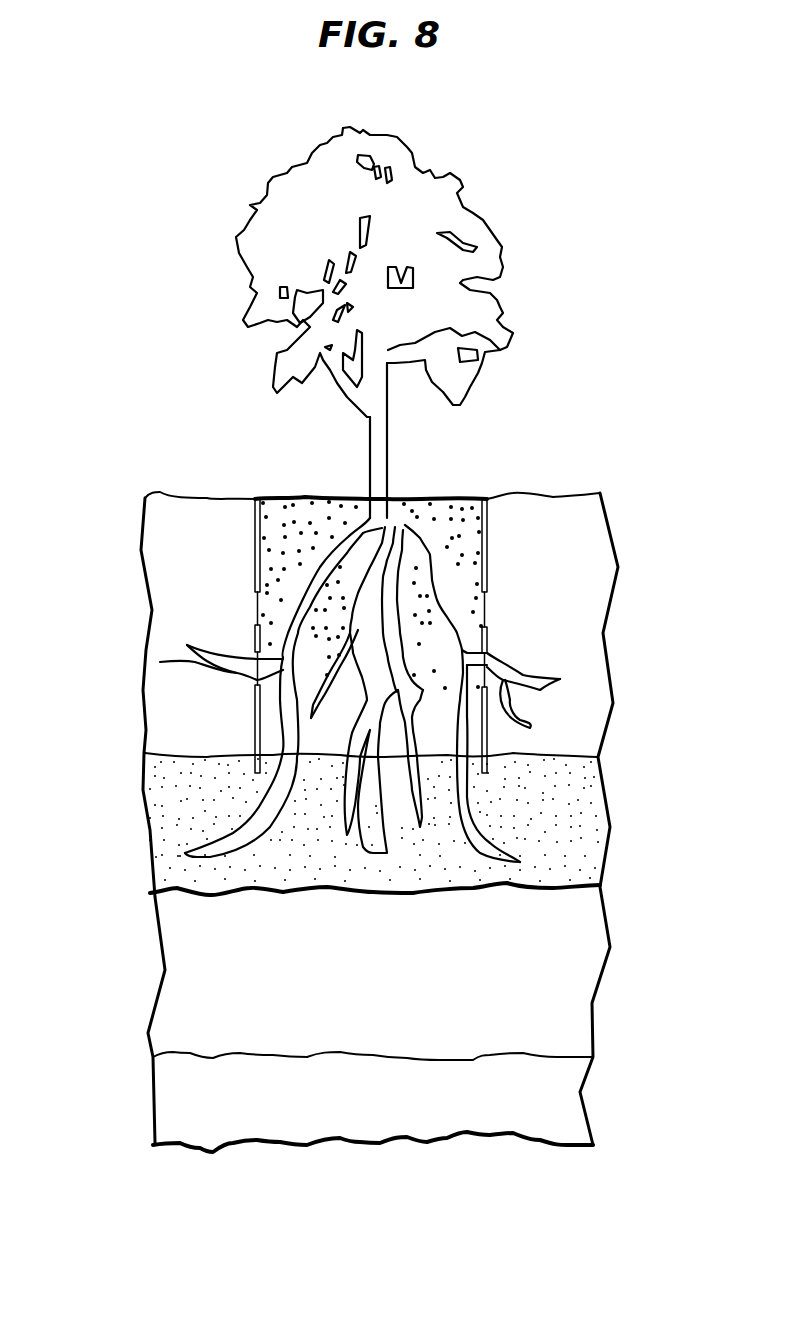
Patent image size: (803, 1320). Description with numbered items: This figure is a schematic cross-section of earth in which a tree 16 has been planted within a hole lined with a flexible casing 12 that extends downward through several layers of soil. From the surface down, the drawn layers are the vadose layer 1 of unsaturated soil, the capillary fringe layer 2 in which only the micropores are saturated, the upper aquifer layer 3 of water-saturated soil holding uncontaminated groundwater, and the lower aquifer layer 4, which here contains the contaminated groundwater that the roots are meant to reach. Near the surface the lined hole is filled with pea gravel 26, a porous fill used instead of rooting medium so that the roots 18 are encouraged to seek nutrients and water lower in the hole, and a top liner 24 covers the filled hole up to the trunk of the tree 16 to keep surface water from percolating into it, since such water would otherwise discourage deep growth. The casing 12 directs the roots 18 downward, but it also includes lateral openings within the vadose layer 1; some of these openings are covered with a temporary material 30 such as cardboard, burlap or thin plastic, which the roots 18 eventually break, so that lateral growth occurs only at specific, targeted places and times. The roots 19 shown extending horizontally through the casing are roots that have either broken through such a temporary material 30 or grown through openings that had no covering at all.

The vadose layer 1 is at (124, 614).
The capillary fringe layer 2 is at (124, 816).
The upper aquifer layer 3 is at (124, 973).
The lower aquifer layer 4 is at (124, 1094).
The flexible casing 12 is at (256, 512).
The tree 16 is at (388, 443).
The roots 18 is at (457, 643).
The roots 19 is at (160, 662).
The top liner 24 is at (447, 497).
The pea gravel 26 is at (297, 517).
The temporary material 30 is at (253, 612).